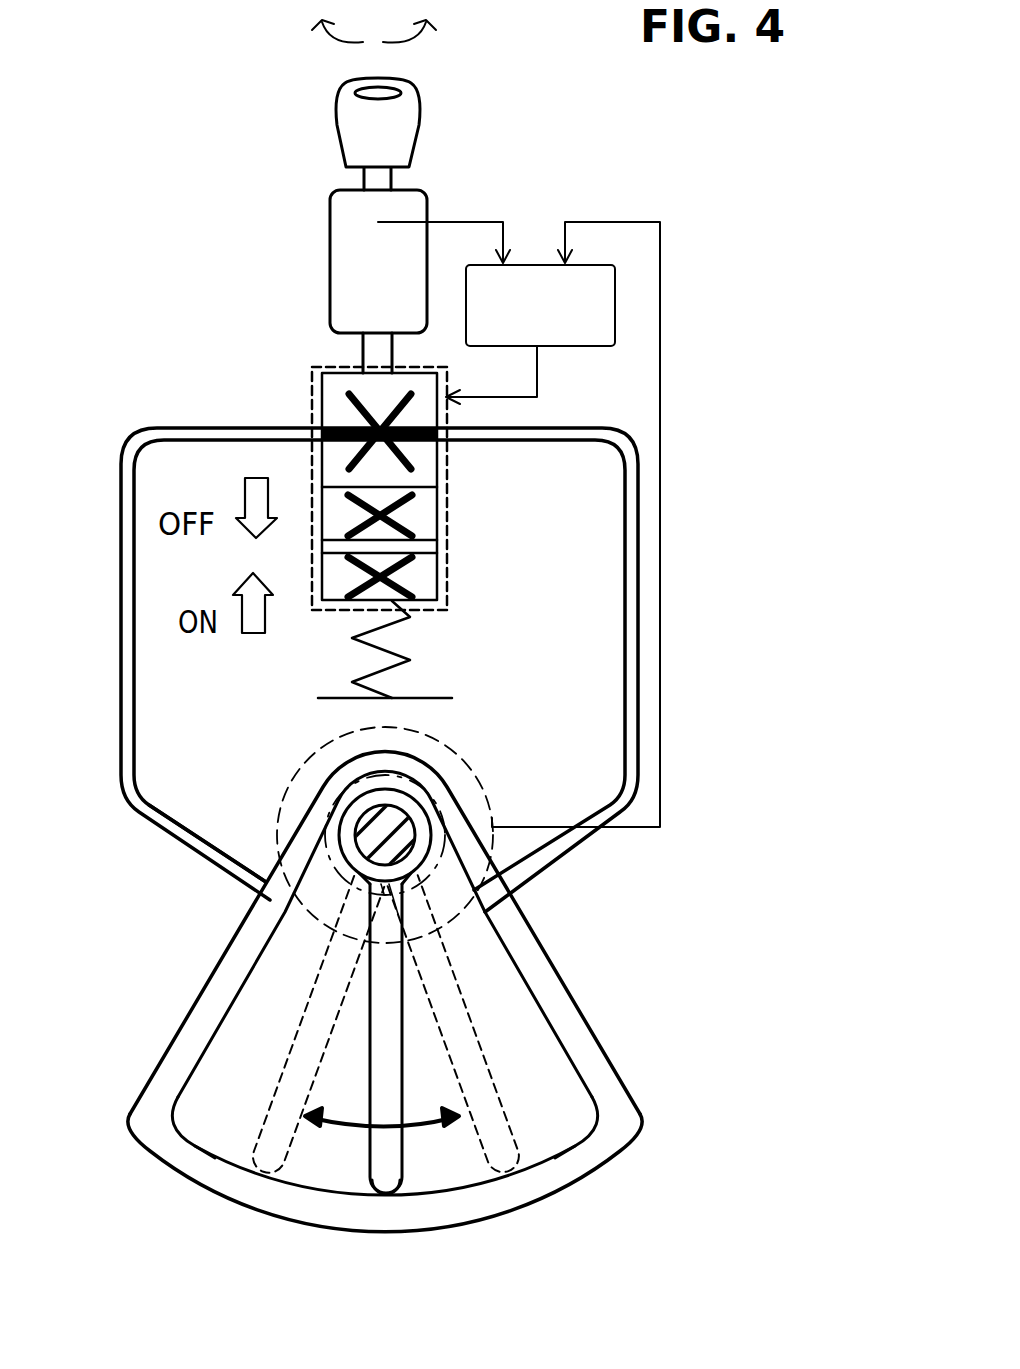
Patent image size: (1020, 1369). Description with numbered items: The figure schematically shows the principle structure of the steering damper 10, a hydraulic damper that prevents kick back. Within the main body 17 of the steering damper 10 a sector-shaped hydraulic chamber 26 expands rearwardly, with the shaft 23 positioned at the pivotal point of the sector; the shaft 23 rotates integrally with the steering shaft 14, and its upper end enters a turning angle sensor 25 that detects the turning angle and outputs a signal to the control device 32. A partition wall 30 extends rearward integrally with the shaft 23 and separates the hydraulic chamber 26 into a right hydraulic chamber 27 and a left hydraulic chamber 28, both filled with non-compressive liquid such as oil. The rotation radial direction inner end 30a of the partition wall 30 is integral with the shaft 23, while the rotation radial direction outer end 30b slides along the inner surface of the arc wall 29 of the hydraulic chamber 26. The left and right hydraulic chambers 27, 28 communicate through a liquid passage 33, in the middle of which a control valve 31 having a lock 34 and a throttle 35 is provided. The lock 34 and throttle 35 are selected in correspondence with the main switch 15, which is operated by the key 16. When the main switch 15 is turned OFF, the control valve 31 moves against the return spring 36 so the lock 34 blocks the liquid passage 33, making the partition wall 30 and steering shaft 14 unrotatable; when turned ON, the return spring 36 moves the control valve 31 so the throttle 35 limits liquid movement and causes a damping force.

The steering damper 10 is at (568, 936).
The steering shaft 14 is at (290, 760).
The main switch 15 is at (340, 245).
The key 16 is at (345, 118).
The main body 17 is at (228, 945).
The shaft 23 is at (380, 802).
The turning angle sensor 25 is at (493, 757).
The hydraulic chamber 26 is at (214, 1118).
The right hydraulic chamber 27 is at (552, 1082).
The left hydraulic chamber 28 is at (245, 1053).
The arc wall 29 is at (330, 1183).
The partition wall 30 is at (396, 1053).
The rotation radial direction inner end 30a is at (340, 858).
The rotation radial direction outer end 30b is at (388, 1196).
The control valve 31 is at (311, 383).
The control device 32 is at (568, 348).
The liquid passage 33 is at (639, 572).
The lock 34 is at (428, 473).
The throttle 35 is at (428, 572).
The return spring 36 is at (412, 658).